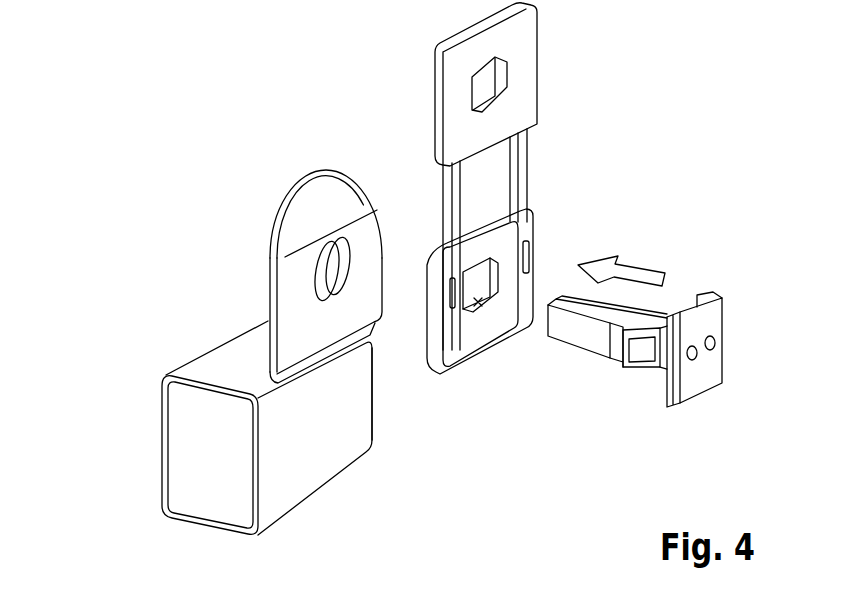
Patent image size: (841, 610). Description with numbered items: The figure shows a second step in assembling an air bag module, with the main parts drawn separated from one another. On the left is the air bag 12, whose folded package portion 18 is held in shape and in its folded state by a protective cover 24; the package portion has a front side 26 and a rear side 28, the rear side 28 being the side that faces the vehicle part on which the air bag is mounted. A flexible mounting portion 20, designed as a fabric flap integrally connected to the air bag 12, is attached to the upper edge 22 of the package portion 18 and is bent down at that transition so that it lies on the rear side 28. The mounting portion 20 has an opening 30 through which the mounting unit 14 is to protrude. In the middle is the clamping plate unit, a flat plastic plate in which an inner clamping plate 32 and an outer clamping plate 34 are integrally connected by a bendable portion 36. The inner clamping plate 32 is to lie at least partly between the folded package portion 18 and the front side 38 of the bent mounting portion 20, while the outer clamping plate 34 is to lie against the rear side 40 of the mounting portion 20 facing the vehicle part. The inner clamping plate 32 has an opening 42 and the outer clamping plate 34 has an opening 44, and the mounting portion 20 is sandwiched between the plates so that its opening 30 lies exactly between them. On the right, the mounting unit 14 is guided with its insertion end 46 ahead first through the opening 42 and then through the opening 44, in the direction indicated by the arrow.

The air bag 12 is at (251, 409).
The mounting unit 14 is at (667, 358).
The folded package portion 18 is at (183, 473).
The mounting portion 20 is at (311, 244).
The upper edge 22 is at (262, 382).
The protective cover 24 is at (290, 482).
The front side 26 is at (142, 436).
The rear side 28 is at (371, 421).
The opening 30 is at (327, 262).
The inner clamping plate 32 is at (513, 309).
The outer clamping plate 34 is at (517, 84).
The bendable portion 36 is at (443, 207).
The front side of the mounting portion 38 is at (377, 205).
The rear side of the mounting portion 40 is at (270, 267).
The opening of the inner clamping plate 42 is at (487, 320).
The opening of the outer clamping plate 44 is at (493, 80).
The insertion end 46 is at (560, 335).